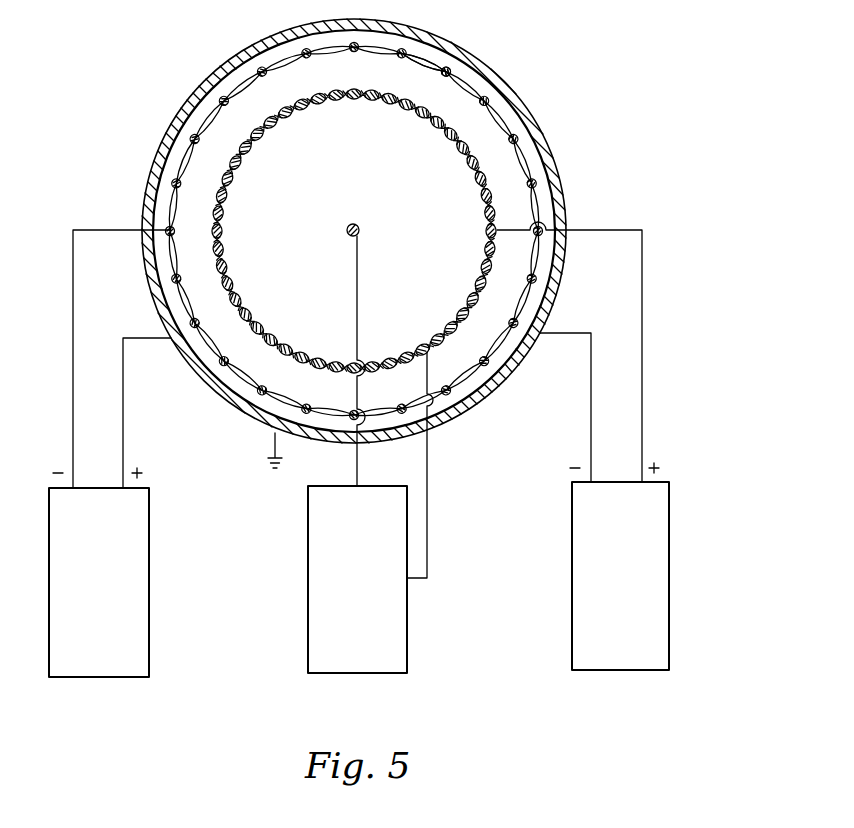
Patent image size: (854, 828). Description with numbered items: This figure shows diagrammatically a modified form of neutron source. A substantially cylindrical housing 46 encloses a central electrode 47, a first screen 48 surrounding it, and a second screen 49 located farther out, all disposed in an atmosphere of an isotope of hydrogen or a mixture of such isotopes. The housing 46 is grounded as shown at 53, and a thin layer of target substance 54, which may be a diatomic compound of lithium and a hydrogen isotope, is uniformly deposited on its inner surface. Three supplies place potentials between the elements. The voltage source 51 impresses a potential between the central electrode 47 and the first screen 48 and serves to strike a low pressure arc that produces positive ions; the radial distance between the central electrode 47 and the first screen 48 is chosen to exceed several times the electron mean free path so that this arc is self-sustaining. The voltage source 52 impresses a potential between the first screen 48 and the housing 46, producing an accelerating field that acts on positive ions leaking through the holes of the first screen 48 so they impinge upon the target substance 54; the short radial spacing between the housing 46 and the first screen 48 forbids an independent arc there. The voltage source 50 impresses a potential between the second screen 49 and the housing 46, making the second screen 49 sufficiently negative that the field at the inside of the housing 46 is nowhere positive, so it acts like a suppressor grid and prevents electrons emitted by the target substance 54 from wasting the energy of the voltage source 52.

The housing 46 is at (248, 421).
The central electrode 47 is at (358, 225).
The first screen 48 is at (399, 103).
The second screen 49 is at (360, 50).
The voltage source 50 is at (118, 678).
The voltage source 51 is at (378, 675).
The voltage source 52 is at (644, 672).
The ground 53 is at (275, 447).
The target substance 54 is at (470, 398).